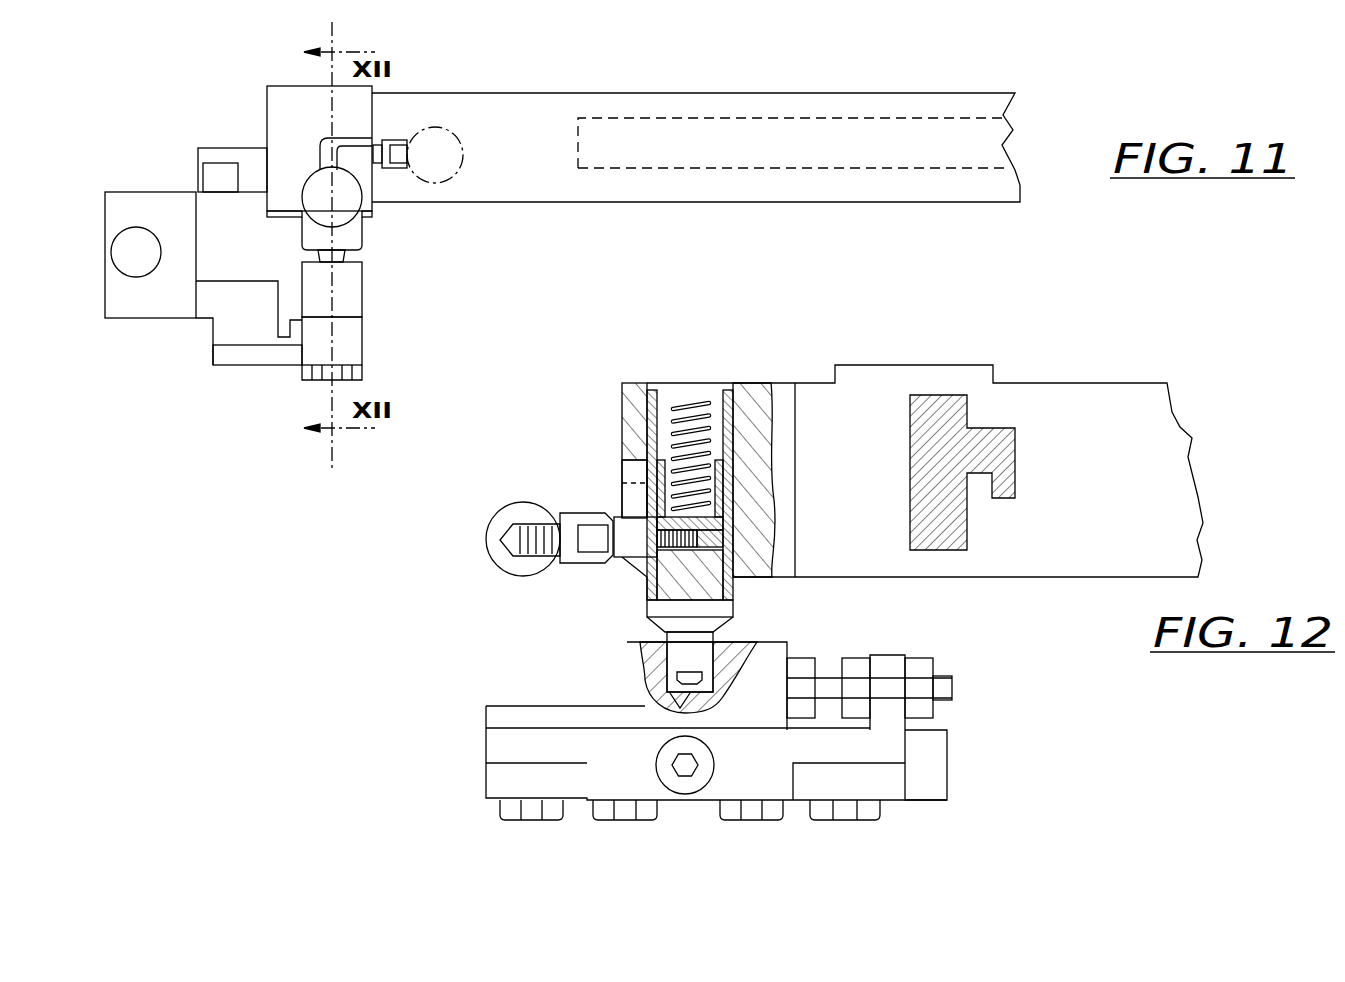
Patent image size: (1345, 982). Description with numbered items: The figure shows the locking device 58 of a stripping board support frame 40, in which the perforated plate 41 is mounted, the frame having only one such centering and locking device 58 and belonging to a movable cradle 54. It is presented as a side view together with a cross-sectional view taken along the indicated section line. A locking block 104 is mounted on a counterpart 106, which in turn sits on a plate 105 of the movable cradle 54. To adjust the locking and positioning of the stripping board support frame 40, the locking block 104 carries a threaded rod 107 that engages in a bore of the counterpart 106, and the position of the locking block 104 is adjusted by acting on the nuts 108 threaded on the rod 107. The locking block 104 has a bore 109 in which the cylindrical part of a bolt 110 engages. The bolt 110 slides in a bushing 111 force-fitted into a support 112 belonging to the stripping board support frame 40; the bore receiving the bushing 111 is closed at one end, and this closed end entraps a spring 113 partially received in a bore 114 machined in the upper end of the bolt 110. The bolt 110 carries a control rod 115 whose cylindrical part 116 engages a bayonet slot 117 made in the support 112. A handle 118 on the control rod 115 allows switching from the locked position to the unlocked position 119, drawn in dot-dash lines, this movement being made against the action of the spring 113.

In FIG. 11, the stripping board support frame 40 is at (467, 93).
In FIG. 12, the stripping board support frame 40 is at (1063, 447).
In FIG. 11, the perforated plate 41 is at (742, 147).
In FIG. 11, the movable cradle 54 is at (88, 312).
In FIG. 12, the movable cradle 54 is at (895, 802).
In FIG. 11, the locking device 58 is at (388, 223).
In FIG. 11, the locking block 104 is at (347, 293).
In FIG. 12, the locking block 104 is at (562, 703).
In FIG. 11, the plate 105 is at (257, 355).
In FIG. 12, the plate 105 is at (820, 787).
In FIG. 11, the counterpart 106 is at (340, 333).
In FIG. 12, the counterpart 106 is at (763, 762).
In FIG. 12, the threaded rod 107 is at (947, 688).
In FIG. 12, the nuts 108 is at (858, 663).
In FIG. 12, the bore 109 is at (643, 655).
In FIG. 11, the bolt 110 is at (353, 257).
In FIG. 12, the bolt 110 is at (657, 600).
In FIG. 12, the bushing 111 is at (733, 447).
In FIG. 11, the support 112 is at (287, 120).
In FIG. 12, the support 112 is at (737, 392).
In FIG. 12, the spring 113 is at (670, 423).
In FIG. 12, the bore 114 is at (663, 458).
In FIG. 11, the control rod 115 is at (397, 170).
In FIG. 12, the control rod 115 is at (515, 522).
In FIG. 12, the cylindrical part 116 is at (630, 542).
In FIG. 11, the bayonet slot 117 is at (353, 147).
In FIG. 12, the bayonet slot 117 is at (633, 470).
In FIG. 11, the handle 118 is at (318, 203).
In FIG. 12, the handle 118 is at (498, 573).
In FIG. 11, the unlocked position 119 is at (463, 155).